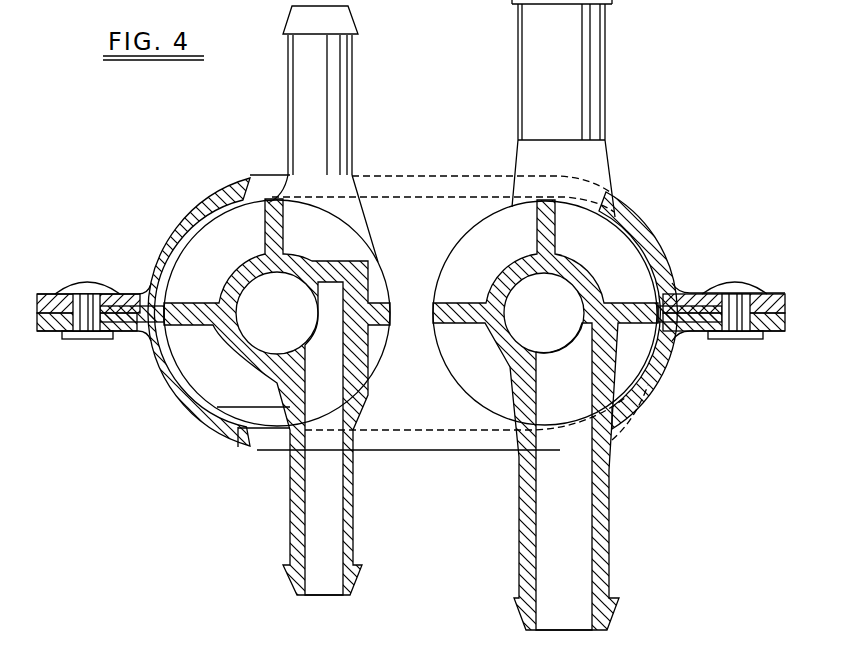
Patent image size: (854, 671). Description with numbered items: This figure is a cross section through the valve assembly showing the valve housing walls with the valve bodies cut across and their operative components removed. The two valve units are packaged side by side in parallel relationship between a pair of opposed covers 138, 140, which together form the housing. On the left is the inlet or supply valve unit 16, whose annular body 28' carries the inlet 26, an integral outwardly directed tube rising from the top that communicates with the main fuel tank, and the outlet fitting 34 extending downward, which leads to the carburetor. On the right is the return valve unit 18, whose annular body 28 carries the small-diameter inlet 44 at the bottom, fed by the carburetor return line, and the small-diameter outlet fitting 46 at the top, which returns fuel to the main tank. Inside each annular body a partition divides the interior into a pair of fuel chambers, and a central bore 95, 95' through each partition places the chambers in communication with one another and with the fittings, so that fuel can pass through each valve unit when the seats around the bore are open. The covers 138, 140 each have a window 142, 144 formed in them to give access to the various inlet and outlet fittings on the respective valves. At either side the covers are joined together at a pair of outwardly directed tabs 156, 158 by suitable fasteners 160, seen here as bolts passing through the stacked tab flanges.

The inlet or supply valve unit 16 is at (213, 300).
The return valve unit 18 is at (521, 297).
The inlet 26 is at (590, 35).
The annular body 28 is at (255, 290).
The annular body 28' is at (574, 282).
The outlet fitting 34 is at (550, 415).
The inlet 44 is at (294, 397).
The outlet fitting 46 is at (342, 68).
The bore 95 is at (330, 285).
The bore 95' is at (564, 292).
The cover 138 is at (641, 398).
The cover 140 is at (645, 246).
The window 142 is at (253, 178).
The window 144 is at (258, 438).
The outwardly directed tab 156 is at (53, 326).
The outwardly directed tab 158 is at (50, 300).
The fastener 160 is at (84, 303).